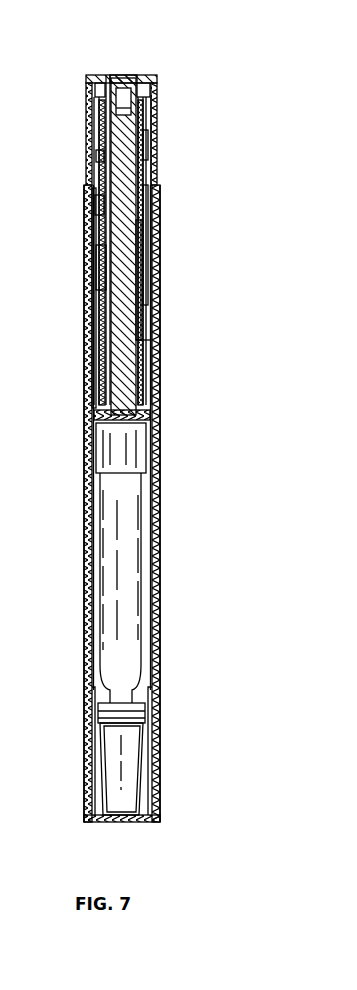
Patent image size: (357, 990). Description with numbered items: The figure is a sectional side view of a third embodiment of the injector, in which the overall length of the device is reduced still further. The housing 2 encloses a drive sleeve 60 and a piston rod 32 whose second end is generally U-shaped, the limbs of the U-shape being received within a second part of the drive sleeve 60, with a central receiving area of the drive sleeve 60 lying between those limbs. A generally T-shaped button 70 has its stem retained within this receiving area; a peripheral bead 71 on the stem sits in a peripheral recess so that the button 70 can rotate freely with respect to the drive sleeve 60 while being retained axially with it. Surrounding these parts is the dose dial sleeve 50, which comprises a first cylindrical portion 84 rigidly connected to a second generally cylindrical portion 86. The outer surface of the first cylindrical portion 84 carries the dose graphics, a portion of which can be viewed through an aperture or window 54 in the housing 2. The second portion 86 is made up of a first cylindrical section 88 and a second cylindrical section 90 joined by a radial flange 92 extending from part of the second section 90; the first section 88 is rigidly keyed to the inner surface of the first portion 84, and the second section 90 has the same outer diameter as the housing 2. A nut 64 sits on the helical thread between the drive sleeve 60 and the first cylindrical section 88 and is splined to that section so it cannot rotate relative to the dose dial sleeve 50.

The housing 2 is at (155, 278).
The piston rod 32 is at (118, 249).
The dose dial sleeve 50 is at (84, 318).
The aperture or window 54 is at (80, 169).
The drive sleeve 60 is at (157, 90).
The nut 64 is at (152, 197).
The button 70 is at (128, 75).
The peripheral bead 71 is at (113, 76).
The first cylindrical portion 84 is at (157, 230).
The second generally cylindrical portion 86 is at (157, 150).
The first cylindrical section 88 is at (87, 150).
The second cylindrical section 90 is at (157, 118).
The radial flange 92 is at (87, 108).